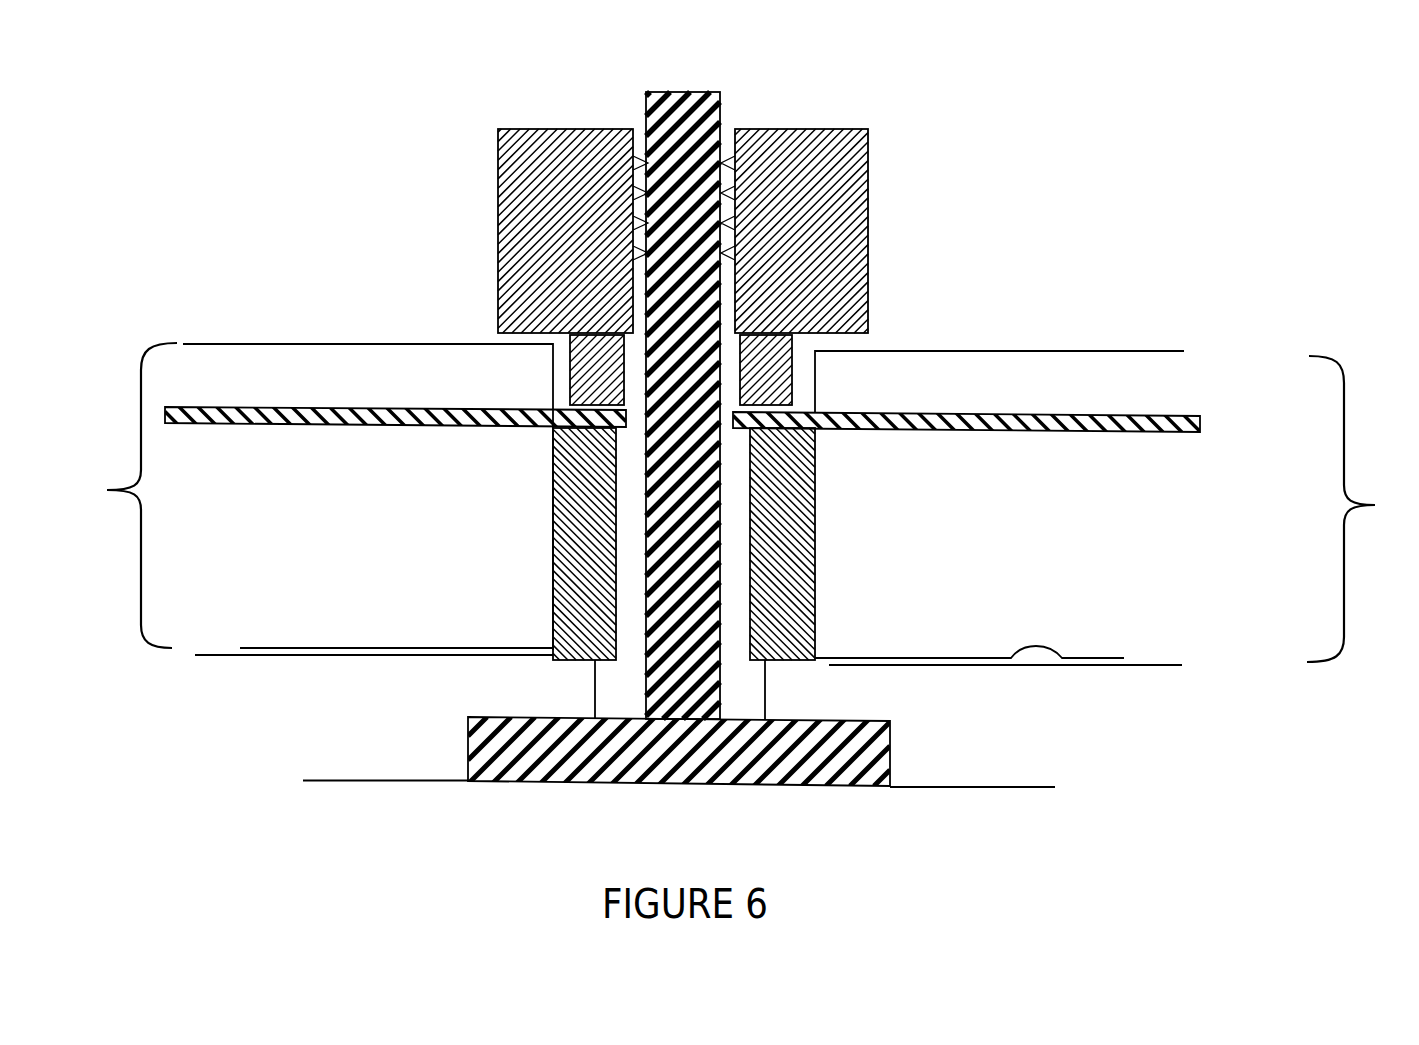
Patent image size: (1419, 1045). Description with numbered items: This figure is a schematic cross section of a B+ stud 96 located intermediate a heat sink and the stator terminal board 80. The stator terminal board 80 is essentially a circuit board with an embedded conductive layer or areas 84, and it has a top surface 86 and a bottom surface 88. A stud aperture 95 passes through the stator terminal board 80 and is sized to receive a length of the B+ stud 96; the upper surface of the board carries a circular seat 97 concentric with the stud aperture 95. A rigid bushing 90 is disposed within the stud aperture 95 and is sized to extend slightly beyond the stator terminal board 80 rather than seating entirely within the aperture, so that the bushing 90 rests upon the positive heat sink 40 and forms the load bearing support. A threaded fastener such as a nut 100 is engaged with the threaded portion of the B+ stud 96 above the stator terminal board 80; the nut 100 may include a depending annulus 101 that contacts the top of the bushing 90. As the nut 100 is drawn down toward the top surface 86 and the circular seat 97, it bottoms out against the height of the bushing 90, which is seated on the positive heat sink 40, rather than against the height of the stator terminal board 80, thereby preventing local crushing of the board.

The positive heat sink 40 is at (323, 738).
The stator terminal board 80 is at (737, 502).
The conductive layer or areas 84 is at (590, 428).
The top surface 86 is at (325, 343).
The bottom surface 88 is at (1062, 658).
The rigid bushing 90 is at (815, 658).
The stud aperture 95 is at (553, 540).
The B+ stud 96 is at (723, 98).
The circular seat 97 is at (793, 408).
The nut 100 is at (867, 220).
The depending annulus 101 is at (578, 360).